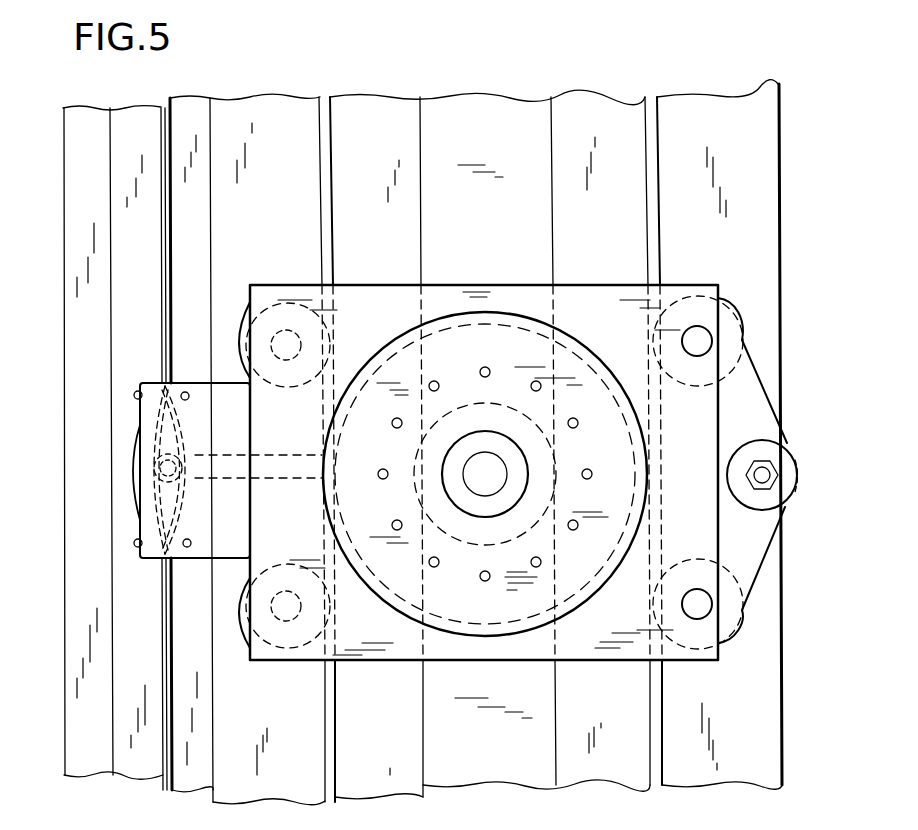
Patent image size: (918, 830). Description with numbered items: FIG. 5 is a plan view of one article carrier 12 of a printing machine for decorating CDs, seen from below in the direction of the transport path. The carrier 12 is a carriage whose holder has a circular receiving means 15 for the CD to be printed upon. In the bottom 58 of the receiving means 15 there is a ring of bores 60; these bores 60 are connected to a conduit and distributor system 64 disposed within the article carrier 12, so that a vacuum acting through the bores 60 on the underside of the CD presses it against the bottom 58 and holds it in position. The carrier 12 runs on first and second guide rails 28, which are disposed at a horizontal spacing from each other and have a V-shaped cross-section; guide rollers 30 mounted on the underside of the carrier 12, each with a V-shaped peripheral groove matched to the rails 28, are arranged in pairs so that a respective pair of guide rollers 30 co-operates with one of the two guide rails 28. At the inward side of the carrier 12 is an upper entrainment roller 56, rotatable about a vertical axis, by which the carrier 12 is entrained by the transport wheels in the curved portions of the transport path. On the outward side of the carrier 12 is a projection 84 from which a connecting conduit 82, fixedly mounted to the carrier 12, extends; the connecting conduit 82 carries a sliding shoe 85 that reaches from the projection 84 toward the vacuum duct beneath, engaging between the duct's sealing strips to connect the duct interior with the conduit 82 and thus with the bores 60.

The article carrier 12 is at (406, 670).
The receiving means 15 is at (577, 368).
The guide rails 28 is at (320, 116).
The guide rollers 30 is at (247, 321).
The entrainment roller 56 is at (773, 448).
The bottom of the receiving means 58 is at (485, 474).
The bores 60 is at (383, 468).
The conduit and distributor system 64 is at (216, 458).
The connecting conduit 82 is at (163, 472).
The projection 84 is at (205, 549).
The sliding shoe 85 is at (138, 429).